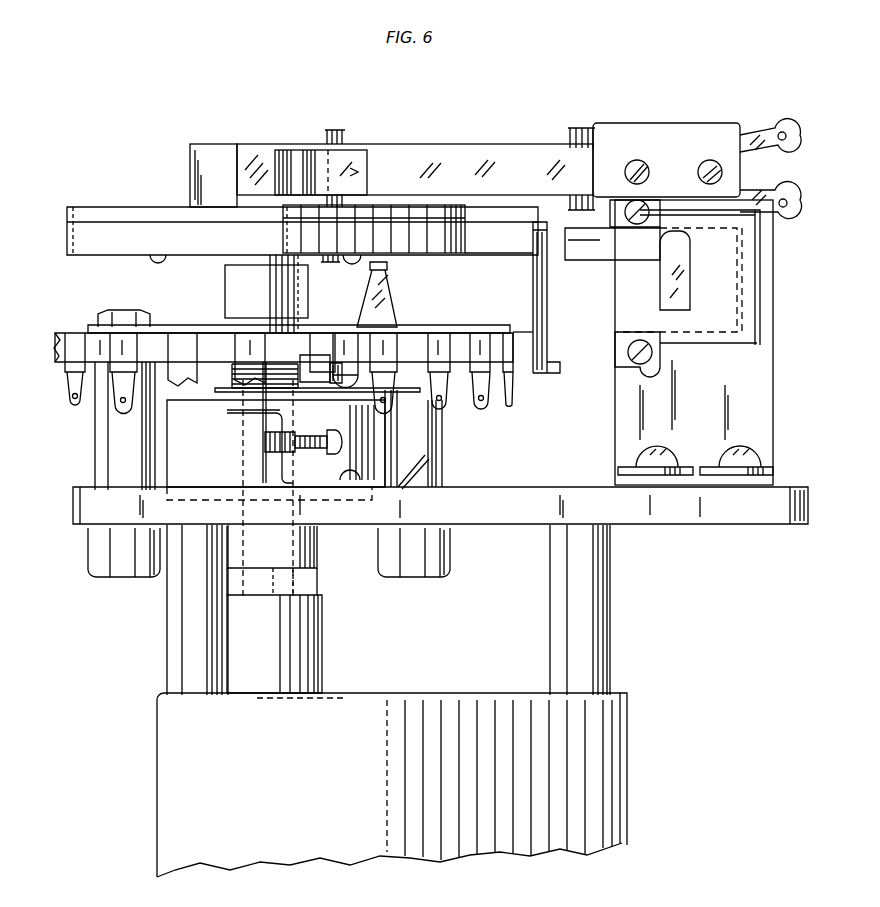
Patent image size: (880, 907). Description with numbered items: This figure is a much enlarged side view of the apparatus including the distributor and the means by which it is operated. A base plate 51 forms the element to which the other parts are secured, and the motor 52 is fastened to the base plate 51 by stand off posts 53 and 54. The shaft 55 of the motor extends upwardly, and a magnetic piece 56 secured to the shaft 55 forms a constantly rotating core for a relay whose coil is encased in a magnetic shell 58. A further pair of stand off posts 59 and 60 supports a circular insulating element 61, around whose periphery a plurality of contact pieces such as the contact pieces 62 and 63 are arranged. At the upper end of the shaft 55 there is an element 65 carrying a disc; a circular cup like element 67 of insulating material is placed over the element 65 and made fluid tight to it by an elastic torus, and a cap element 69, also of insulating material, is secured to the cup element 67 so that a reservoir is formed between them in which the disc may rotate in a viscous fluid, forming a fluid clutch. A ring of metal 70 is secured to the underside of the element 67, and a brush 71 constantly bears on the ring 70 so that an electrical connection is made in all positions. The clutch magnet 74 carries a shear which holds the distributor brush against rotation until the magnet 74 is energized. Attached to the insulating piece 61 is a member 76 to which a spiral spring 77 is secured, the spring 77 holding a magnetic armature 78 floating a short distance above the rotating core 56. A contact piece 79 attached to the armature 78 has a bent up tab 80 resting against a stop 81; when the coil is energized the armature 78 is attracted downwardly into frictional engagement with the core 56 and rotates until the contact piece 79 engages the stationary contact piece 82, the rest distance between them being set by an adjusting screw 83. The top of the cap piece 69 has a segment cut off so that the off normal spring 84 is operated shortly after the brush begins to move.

The base plate 51 is at (667, 520).
The motor 52 is at (382, 695).
The stand off post 53 is at (168, 640).
The stand off post 54 is at (556, 636).
The shaft 55 is at (300, 582).
The magnetic piece 56 is at (308, 548).
The magnetic shell 58 is at (170, 440).
The stand off post 59 is at (100, 444).
The stand off post 60 is at (440, 446).
The circular insulating element 61 is at (220, 352).
The contact piece 62 is at (322, 333).
The contact piece 63 is at (182, 322).
The element 65 is at (232, 306).
The circular cup like element 67 is at (463, 238).
The cap element 69 is at (225, 148).
The ring of metal 70 is at (148, 260).
The brush 71 is at (385, 293).
The clutch magnet 74 is at (697, 338).
The member 76 is at (158, 324).
The spiral spring 77 is at (232, 380).
The magnetic armature 78 is at (228, 392).
The contact piece 79 is at (406, 392).
The bent up tab 80 is at (335, 375).
The stop 81 is at (320, 368).
The stationary contact piece 82 is at (263, 440).
The adjusting screw 83 is at (305, 435).
The off normal spring 84 is at (296, 152).